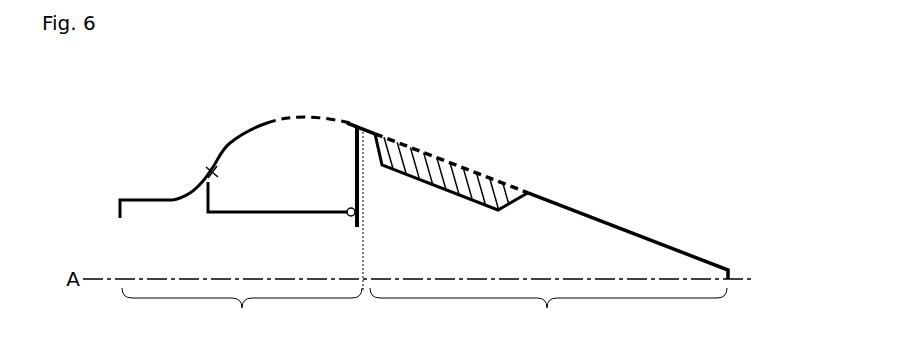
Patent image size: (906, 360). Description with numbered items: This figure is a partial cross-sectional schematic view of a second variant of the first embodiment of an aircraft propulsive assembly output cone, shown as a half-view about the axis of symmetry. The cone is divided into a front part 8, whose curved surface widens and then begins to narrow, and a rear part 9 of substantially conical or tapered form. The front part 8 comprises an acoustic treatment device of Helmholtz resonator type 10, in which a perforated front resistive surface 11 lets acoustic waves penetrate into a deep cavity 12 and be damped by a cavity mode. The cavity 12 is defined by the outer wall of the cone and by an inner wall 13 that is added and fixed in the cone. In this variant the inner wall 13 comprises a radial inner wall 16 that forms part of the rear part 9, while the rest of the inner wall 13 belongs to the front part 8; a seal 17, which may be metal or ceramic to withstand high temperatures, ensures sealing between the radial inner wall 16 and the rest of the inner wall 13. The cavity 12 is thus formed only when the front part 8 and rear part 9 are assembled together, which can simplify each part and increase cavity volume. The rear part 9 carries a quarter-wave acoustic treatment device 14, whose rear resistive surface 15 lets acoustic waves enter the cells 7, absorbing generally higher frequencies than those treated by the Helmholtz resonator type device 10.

The cells 7 is at (448, 173).
The front part 8 is at (242, 313).
The rear part 9 is at (548, 312).
The acoustic treatment device of Helmholtz resonator type 10 is at (259, 221).
The front resistive surface 11 is at (307, 117).
The cavity 12 is at (255, 153).
The inner wall 13 is at (277, 214).
The quarter-wave acoustic treatment device 14 is at (427, 204).
The rear resistive surface 15 is at (488, 177).
The radial inner wall 16 is at (360, 178).
The seal 17 is at (355, 226).